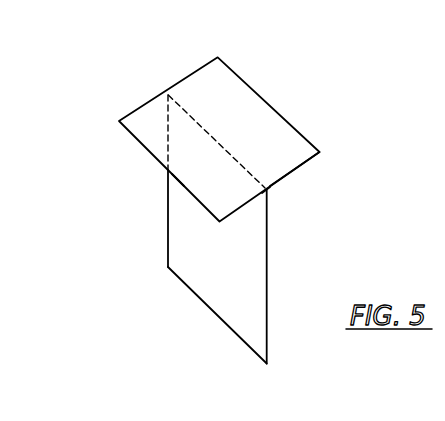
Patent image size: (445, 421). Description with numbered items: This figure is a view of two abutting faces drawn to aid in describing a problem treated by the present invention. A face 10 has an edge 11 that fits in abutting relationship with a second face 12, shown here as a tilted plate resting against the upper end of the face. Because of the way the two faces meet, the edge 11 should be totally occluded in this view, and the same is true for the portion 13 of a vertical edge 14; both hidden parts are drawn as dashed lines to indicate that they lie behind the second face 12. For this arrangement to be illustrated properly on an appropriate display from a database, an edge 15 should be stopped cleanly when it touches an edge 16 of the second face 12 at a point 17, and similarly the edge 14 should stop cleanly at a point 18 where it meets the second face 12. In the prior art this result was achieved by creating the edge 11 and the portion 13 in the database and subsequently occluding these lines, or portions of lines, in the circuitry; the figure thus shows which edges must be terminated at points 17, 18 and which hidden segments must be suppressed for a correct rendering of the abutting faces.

The face 10 is at (190, 208).
The edge 11 is at (186, 111).
The second face 12 is at (291, 133).
The portion of a vertical edge 13 is at (167, 130).
The vertical edge 14 is at (167, 235).
The edge 15 is at (270, 267).
The edge 16 is at (308, 164).
The point 17 is at (266, 190).
The point 18 is at (178, 182).